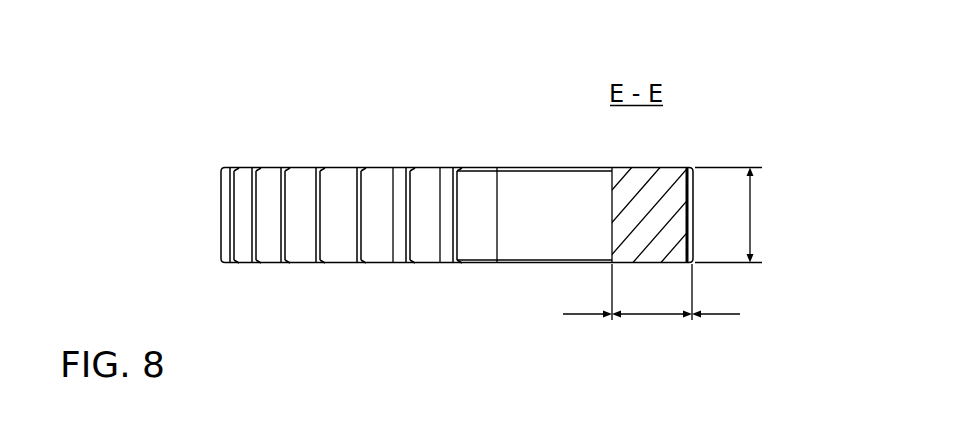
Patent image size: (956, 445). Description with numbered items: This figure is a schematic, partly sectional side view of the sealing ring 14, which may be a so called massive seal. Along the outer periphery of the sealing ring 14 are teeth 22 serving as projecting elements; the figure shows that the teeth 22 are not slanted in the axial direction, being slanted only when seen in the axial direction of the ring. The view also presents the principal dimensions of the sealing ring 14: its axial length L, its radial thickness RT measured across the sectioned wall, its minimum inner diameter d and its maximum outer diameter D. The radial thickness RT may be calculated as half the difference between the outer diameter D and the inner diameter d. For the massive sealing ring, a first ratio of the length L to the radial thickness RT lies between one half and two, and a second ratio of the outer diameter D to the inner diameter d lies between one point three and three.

The sealing ring 14 is at (141, 142).
The teeth 22 is at (330, 187).
The axial length L is at (736, 215).
The minimum inner diameter d is at (587, 292).
The radial thickness RT is at (652, 302).
The maximum outer diameter D is at (716, 292).